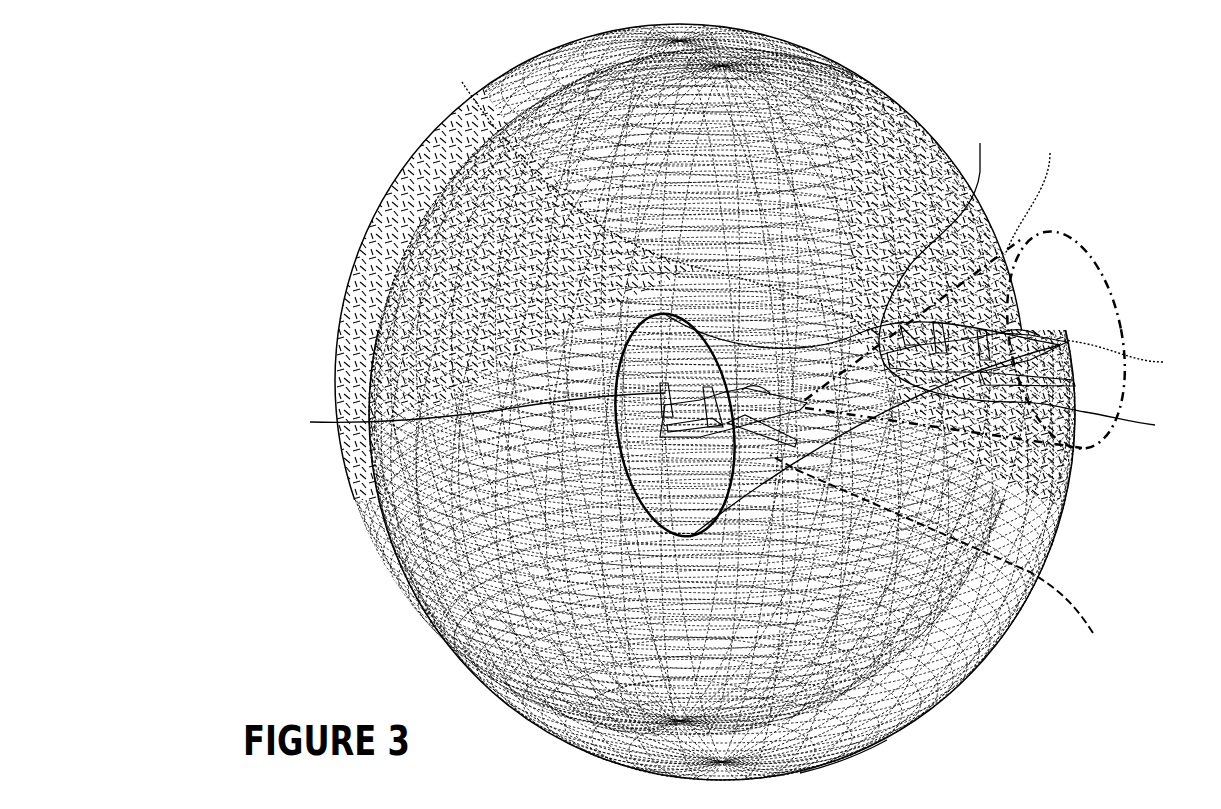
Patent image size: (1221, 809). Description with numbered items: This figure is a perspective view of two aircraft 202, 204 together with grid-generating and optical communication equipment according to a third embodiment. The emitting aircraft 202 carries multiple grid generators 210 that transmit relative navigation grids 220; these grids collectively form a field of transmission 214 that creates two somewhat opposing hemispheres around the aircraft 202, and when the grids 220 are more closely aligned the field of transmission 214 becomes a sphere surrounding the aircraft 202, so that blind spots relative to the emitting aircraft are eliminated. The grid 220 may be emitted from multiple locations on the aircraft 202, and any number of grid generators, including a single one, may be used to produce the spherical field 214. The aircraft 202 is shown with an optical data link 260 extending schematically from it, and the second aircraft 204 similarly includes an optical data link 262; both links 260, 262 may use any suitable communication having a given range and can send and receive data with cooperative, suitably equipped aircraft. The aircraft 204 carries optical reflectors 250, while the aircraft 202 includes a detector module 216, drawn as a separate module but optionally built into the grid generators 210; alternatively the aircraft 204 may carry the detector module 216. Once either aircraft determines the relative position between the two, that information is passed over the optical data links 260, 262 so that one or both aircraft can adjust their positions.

The aircraft 202 is at (692, 453).
The aircraft 204 is at (1067, 330).
The grid generator 210 is at (469, 413).
The field of transmission 214 is at (887, 740).
The detector module 216 is at (817, 216).
The relative navigation grid 220 is at (925, 112).
The optical reflector 250 is at (1036, 275).
The optical data link 260 is at (1110, 340).
The optical data link 262 is at (941, 560).